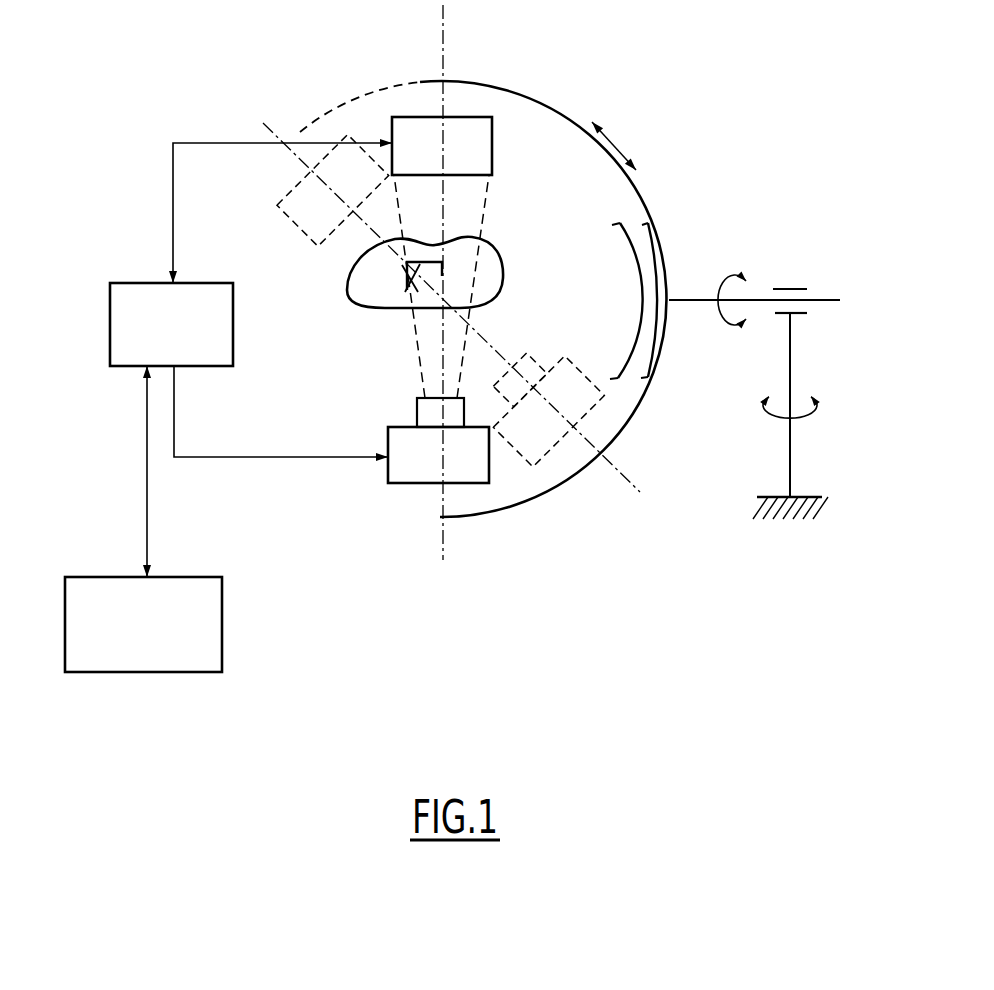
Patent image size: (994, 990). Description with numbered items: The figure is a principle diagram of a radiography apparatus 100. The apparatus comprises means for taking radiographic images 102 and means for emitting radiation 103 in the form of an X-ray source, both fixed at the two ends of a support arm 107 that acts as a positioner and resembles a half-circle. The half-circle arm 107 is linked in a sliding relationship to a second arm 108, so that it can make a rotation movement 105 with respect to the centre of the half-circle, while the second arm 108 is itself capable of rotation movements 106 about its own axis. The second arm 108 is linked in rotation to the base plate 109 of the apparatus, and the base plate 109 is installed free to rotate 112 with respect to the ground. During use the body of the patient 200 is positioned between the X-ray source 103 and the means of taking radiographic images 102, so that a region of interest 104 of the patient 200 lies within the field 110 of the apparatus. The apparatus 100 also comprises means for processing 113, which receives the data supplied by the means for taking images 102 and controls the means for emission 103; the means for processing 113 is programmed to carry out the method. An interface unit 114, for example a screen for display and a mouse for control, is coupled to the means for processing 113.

The radiography apparatus 100 is at (718, 130).
The means for taking radiographic images 102 is at (487, 137).
The means for emitting radiation 103 is at (398, 463).
The region of interest 104 is at (449, 273).
The rotation of gantry 105 is at (615, 138).
The rotation movements 106 is at (753, 290).
The support arm 107 is at (624, 412).
The second arm 108 is at (768, 300).
The base plate 109 is at (793, 346).
The field 110 is at (490, 207).
The rotation 112 is at (808, 420).
The means for processing 113 is at (137, 347).
The interface unit 114 is at (193, 626).
The patient 200 is at (487, 290).